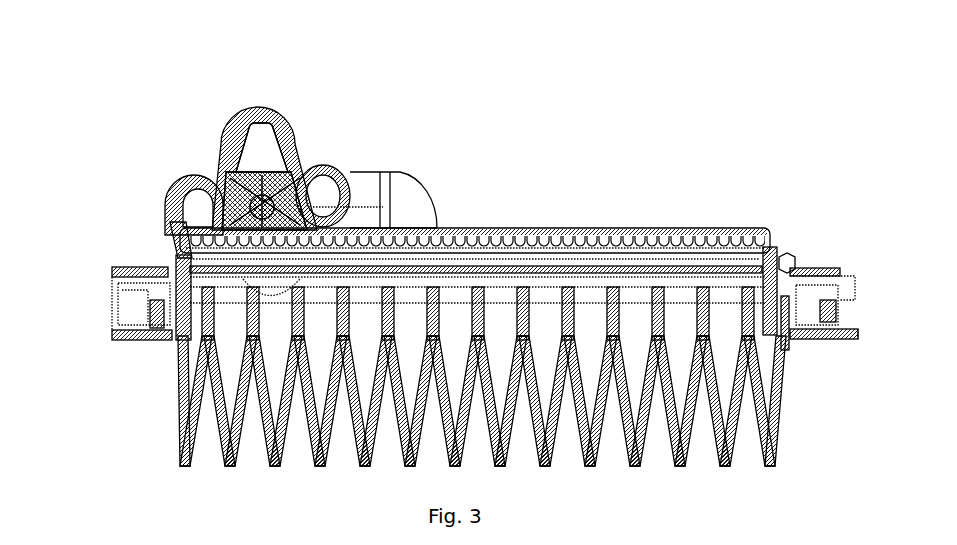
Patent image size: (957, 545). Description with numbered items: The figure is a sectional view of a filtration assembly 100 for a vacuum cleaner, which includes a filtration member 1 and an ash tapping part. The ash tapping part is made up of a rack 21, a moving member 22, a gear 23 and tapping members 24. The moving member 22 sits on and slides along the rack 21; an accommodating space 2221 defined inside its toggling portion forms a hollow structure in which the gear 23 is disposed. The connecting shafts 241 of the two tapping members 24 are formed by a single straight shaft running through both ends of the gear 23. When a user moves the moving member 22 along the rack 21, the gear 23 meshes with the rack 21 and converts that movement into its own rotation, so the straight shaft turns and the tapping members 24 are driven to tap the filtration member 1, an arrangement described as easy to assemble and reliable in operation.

The filtration assembly 100 is at (356, 56).
The filtration member 1 is at (250, 312).
The rack 21 is at (495, 228).
The moving member 22 is at (289, 123).
The accommodating space 2221 is at (258, 160).
The gear 23 is at (357, 207).
The tapping member 24 is at (180, 183).
The connecting shaft 241 is at (280, 175).